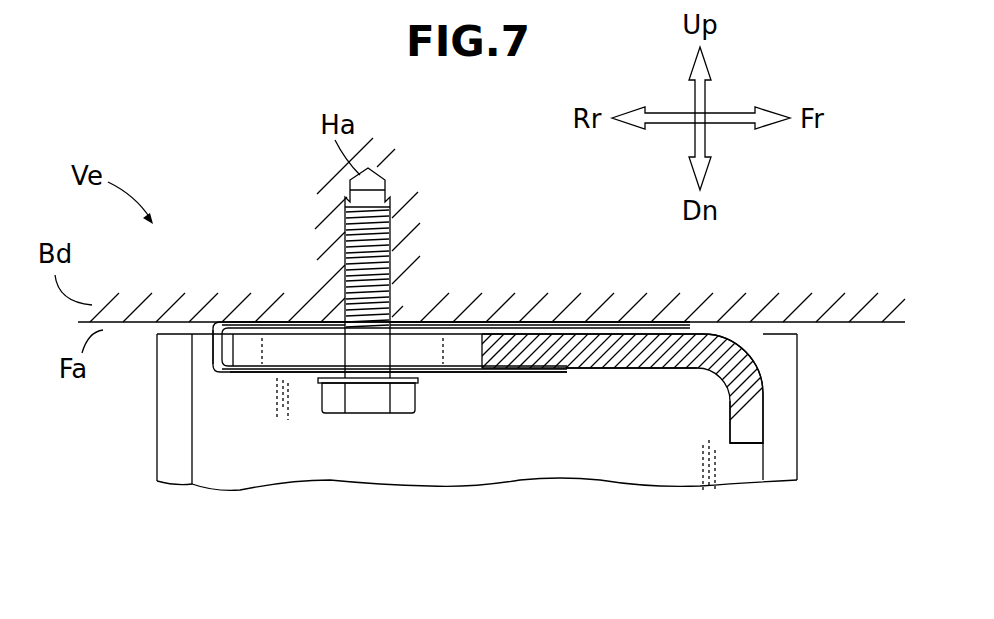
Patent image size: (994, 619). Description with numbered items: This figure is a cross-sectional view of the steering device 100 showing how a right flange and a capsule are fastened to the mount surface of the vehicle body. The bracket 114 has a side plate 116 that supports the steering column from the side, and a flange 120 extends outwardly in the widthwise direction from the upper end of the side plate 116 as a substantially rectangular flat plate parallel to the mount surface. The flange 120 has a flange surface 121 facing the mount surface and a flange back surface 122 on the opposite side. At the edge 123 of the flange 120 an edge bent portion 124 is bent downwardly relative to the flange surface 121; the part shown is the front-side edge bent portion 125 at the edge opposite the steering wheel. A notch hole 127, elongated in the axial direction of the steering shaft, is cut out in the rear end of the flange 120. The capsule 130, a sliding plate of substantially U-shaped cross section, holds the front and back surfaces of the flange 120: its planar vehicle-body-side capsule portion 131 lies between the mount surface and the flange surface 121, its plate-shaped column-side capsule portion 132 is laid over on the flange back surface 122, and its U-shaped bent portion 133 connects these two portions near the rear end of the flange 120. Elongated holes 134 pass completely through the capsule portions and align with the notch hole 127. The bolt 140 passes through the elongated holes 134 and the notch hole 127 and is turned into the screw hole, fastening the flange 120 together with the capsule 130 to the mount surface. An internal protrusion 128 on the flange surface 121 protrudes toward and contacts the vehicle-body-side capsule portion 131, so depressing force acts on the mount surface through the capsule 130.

The steering device 100 is at (759, 525).
The bracket 114 is at (228, 495).
The side plate 116 is at (531, 473).
The flange 120 is at (653, 377).
The flange surface 121 is at (548, 330).
The flange back surface 122 is at (582, 370).
The edge 123 is at (730, 347).
The edge bent portion 124 is at (808, 441).
The front-side edge bent portion 125 is at (760, 412).
The notch hole 127 is at (485, 352).
The internal protrusion 128 is at (617, 323).
The capsule 130 is at (213, 330).
The vehicle-body-side capsule portion 131 is at (250, 323).
The column-side capsule portion 132 is at (238, 375).
The bent portion 133 is at (213, 352).
The elongated hole 134 is at (447, 320).
The bolt 140 is at (363, 407).